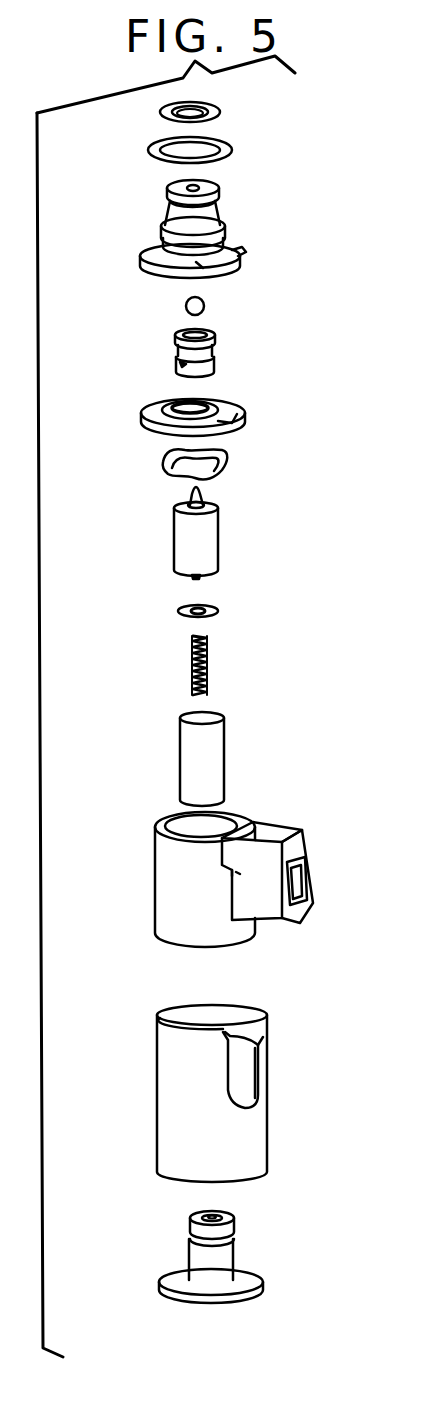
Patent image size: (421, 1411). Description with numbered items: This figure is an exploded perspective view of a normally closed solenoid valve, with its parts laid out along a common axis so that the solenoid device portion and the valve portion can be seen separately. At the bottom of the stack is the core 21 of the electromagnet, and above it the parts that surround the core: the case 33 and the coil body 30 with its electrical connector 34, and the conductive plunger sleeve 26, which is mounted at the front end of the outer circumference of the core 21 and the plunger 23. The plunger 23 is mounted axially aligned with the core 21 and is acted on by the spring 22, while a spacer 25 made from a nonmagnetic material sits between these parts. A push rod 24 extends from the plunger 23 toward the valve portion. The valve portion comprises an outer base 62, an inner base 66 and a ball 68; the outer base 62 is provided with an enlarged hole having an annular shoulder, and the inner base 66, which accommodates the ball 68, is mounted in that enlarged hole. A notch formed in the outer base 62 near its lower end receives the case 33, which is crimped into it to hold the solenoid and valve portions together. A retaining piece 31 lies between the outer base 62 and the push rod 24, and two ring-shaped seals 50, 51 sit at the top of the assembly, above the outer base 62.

The washer 50 is at (229, 112).
The O-ring seal 51 is at (238, 150).
The outer base 62 is at (230, 213).
The ball 68 is at (210, 305).
The inner base 66 is at (225, 357).
The retaining clip 31 is at (235, 465).
The push rod 24 is at (208, 497).
The plunger 23 is at (222, 542).
The spacer 25 is at (227, 611).
The spring 22 is at (218, 669).
The conductive plunger sleeve 26 is at (235, 762).
The coil bobbin 30 is at (152, 888).
The electrical connector 34 is at (318, 852).
The case 33 is at (277, 1135).
The core 21 is at (250, 1253).